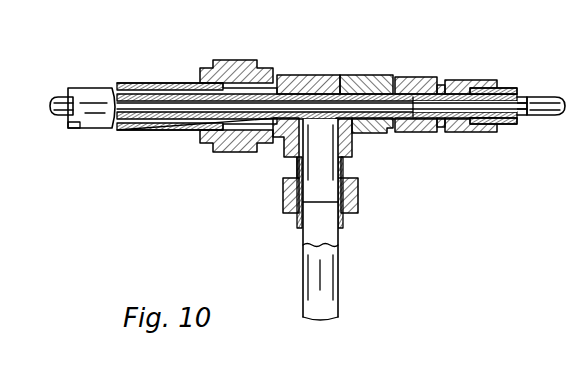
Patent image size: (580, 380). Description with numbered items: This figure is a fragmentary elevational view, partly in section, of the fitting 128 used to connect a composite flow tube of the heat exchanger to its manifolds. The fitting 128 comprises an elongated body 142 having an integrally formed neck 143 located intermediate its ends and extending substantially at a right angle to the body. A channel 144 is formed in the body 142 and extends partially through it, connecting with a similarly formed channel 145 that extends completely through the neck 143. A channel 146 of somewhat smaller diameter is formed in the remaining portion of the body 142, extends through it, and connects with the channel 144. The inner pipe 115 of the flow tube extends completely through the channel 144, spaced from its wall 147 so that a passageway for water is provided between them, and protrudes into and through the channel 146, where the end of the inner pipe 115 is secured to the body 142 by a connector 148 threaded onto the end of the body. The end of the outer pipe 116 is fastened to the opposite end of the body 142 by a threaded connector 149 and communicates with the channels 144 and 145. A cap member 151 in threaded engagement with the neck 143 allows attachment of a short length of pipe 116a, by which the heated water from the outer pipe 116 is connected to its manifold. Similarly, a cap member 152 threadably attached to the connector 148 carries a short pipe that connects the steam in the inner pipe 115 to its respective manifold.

The inner pipe 115 is at (57, 97).
The outer pipe 116 is at (100, 88).
The short length of pipe 116a is at (340, 272).
The fitting 128 is at (340, 62).
The elongated body 142 is at (340, 75).
The neck 143 is at (352, 152).
The channel 144 is at (343, 74).
The channel 145 is at (296, 168).
The channel 146 is at (395, 77).
The wall 147 is at (290, 90).
The connector 148 is at (428, 73).
The threaded connector 149 is at (230, 60).
The cap member 151 is at (358, 191).
The cap member 152 is at (483, 80).